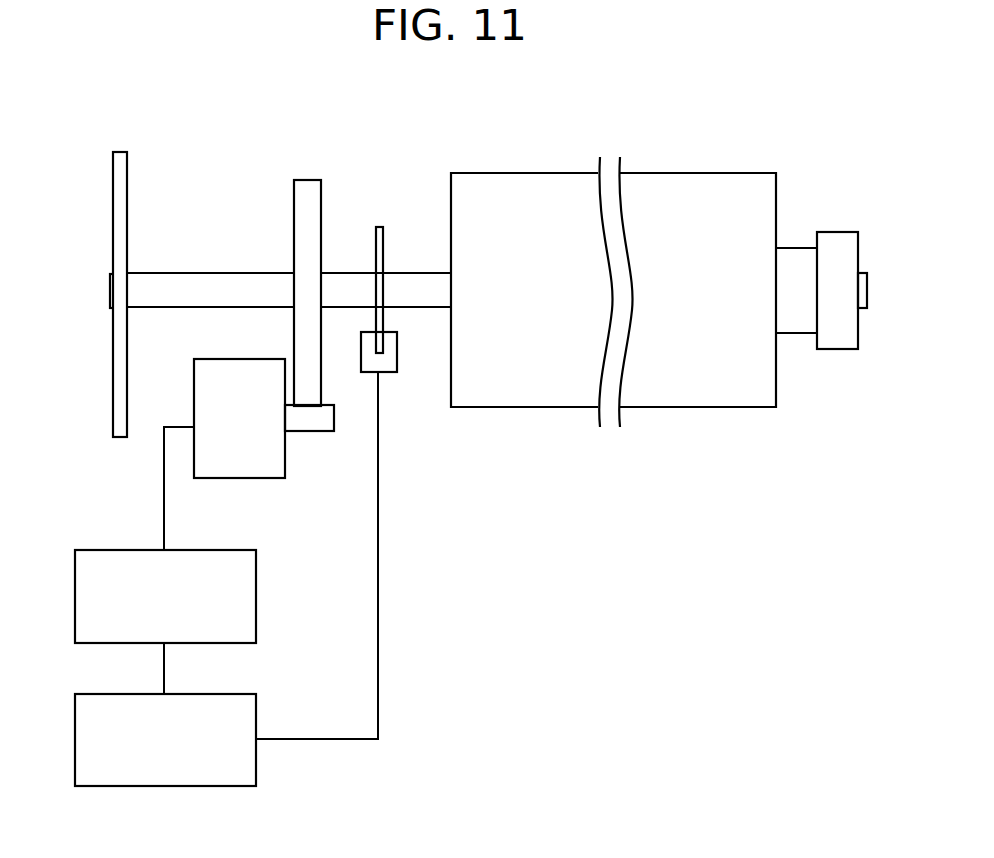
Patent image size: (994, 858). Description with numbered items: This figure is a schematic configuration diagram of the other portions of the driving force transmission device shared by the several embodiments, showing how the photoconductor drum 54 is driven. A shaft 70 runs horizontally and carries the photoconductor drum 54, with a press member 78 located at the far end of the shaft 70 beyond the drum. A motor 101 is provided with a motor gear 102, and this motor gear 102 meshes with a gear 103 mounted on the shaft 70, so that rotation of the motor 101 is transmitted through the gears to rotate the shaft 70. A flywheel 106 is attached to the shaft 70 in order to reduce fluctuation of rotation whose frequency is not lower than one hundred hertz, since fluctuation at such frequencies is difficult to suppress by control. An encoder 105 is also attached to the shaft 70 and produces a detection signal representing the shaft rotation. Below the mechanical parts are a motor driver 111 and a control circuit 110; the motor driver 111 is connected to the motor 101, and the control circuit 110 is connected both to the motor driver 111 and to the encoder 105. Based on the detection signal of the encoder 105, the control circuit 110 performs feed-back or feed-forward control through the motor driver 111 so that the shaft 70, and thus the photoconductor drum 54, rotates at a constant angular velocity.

The photoconductor drum 54 is at (507, 183).
The shaft 70 is at (218, 283).
The press member 78 is at (795, 255).
The motor 101 is at (261, 467).
The motor gear 102 is at (318, 422).
The gear 103 is at (310, 190).
The encoder 105 is at (384, 317).
The flywheel 106 is at (122, 155).
The control circuit 110 is at (115, 705).
The motor driver 111 is at (93, 560).